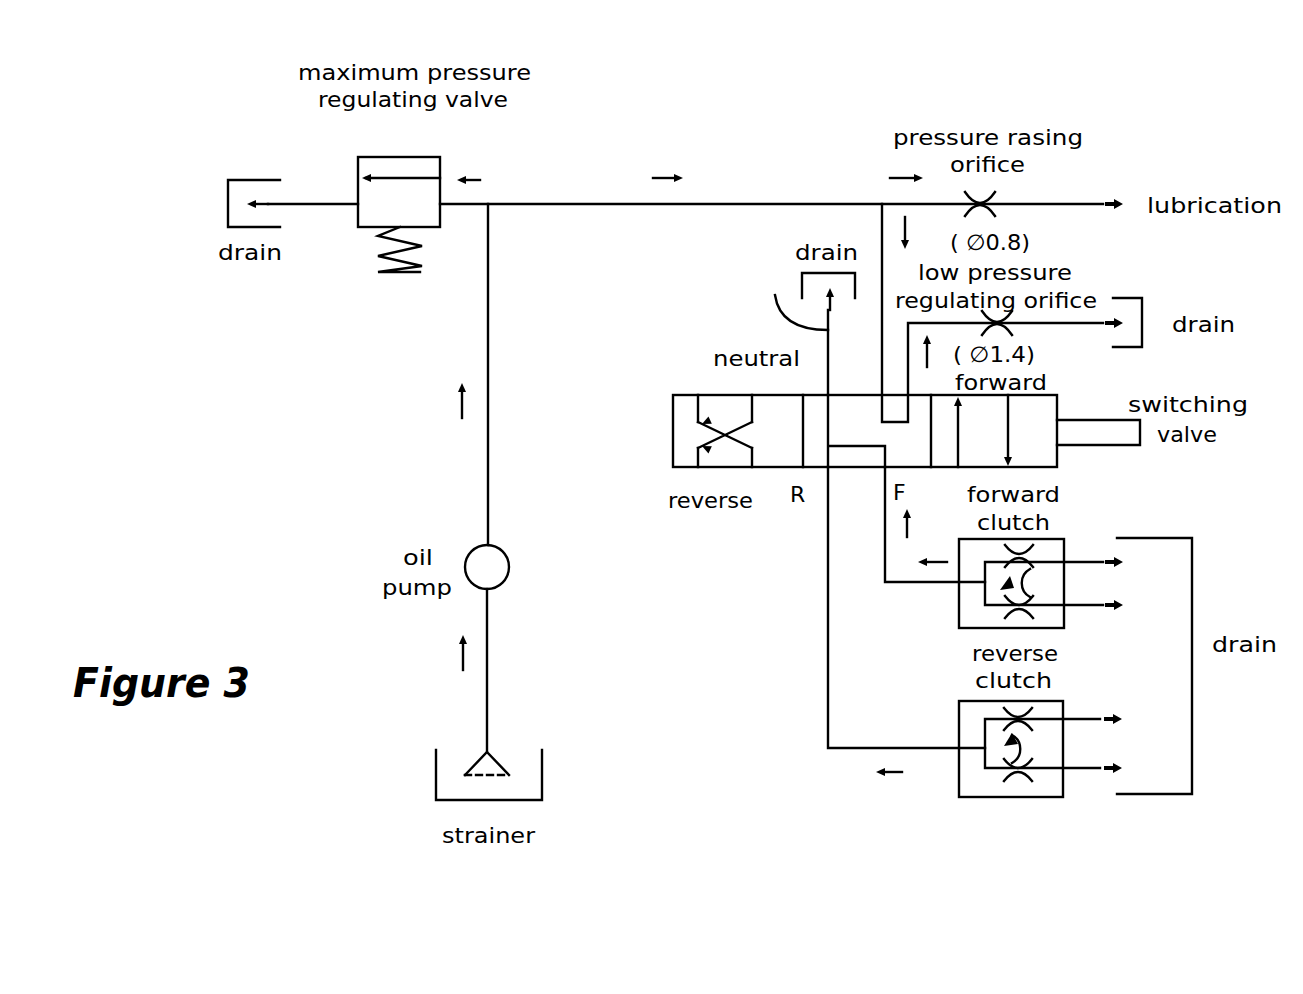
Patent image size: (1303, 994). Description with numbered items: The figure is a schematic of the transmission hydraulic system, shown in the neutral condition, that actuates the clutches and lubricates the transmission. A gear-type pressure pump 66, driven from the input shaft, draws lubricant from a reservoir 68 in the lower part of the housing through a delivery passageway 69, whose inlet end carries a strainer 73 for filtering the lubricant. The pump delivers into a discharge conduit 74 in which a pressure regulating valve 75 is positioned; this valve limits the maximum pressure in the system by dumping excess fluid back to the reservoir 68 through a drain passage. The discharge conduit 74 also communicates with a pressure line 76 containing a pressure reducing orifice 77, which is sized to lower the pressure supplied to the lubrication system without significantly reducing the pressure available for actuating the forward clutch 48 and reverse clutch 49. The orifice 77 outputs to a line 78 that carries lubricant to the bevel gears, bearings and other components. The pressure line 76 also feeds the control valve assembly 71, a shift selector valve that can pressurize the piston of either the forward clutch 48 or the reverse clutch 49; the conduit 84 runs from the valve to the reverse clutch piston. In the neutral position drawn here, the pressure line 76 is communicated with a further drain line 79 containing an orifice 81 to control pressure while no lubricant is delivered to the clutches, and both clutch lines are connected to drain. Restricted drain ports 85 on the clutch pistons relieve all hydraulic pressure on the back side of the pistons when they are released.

The forward clutch 48 is at (959, 605).
The reverse clutch 49 is at (959, 778).
The pressure pump 66 is at (509, 567).
The reservoir 68 is at (238, 180).
The delivery passageway 69 is at (488, 667).
The control valve assembly 71 is at (853, 387).
The strainer 73 is at (498, 760).
The discharge conduit 74 is at (486, 375).
The pressure regulating valve 75 is at (357, 195).
The pressure line 76 is at (795, 203).
The pressure reducing orifice 77 is at (1002, 195).
The lubrication line 78 is at (1072, 205).
The drain line 79 is at (1077, 325).
The orifice 81 is at (1027, 332).
The reverse clutch conduit 84 is at (827, 662).
The restricted drain ports 85 is at (1078, 560).